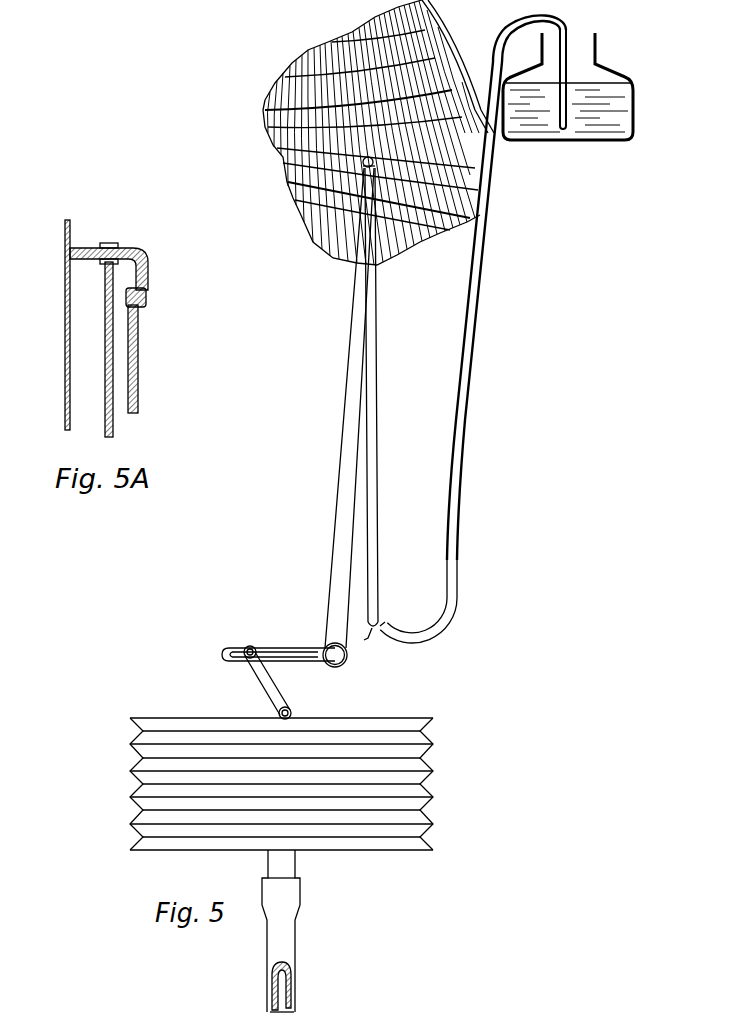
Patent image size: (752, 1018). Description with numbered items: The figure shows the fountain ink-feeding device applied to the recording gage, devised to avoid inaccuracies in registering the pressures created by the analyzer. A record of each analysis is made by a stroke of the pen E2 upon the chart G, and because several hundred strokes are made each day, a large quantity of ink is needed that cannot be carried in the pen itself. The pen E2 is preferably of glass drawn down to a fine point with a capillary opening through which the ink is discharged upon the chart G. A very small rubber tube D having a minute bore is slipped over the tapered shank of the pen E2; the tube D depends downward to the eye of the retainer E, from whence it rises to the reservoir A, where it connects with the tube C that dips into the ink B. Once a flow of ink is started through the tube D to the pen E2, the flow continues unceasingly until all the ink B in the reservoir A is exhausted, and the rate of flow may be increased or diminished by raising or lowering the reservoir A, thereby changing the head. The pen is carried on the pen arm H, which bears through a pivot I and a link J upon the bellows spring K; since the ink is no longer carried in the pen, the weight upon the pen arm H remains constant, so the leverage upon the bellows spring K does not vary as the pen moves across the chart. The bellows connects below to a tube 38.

In FIG. 5, the reservoir A is at (546, 149).
In FIG. 5, the ink B is at (613, 103).
In FIG. 5, the tube C is at (576, 29).
In FIG. 5, the rubber tube D is at (490, 271).
In FIG. 5A, the rubber tube D is at (150, 349).
In FIG. 5, the retainer E is at (388, 621).
In FIG. 5, the pen E2 is at (354, 163).
In FIG. 5A, the pen E2 is at (156, 271).
In FIG. 5, the chart G is at (325, 215).
In FIG. 5A, the chart G is at (57, 246).
In FIG. 5, the pen arm H is at (336, 476).
In FIG. 5A, the pen arm H is at (122, 434).
In FIG. 5, the pivot I is at (356, 661).
In FIG. 5, the link lever J is at (258, 686).
In FIG. 5, the bellows spring K is at (423, 755).
In FIG. 5, the tube 38 is at (297, 930).